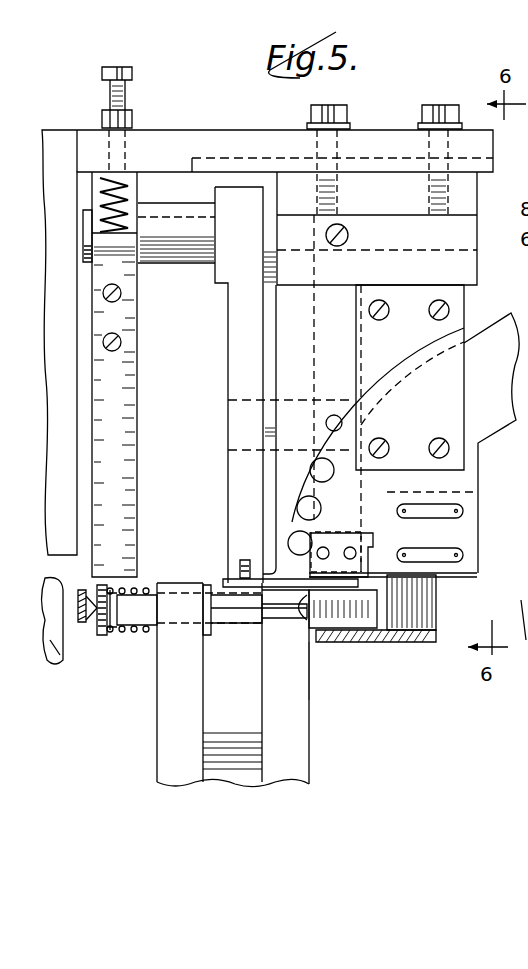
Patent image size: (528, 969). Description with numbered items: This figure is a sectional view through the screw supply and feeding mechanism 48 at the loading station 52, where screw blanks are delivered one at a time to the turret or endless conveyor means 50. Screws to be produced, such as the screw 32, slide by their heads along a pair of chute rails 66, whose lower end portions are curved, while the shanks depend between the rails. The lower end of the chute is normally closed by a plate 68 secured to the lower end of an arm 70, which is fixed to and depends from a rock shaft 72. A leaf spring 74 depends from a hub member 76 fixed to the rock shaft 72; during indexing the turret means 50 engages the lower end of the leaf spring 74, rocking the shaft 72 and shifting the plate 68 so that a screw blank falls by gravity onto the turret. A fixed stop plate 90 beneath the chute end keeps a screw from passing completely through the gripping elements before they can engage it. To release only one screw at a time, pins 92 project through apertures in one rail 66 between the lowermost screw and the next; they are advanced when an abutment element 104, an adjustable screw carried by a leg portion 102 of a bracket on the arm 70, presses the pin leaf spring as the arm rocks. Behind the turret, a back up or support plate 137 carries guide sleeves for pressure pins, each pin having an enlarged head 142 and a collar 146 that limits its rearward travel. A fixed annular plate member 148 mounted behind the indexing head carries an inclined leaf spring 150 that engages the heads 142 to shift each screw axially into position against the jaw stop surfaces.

The screw supply and feeding mechanism 48 is at (380, 114).
The hub member 76 is at (133, 197).
The leaf spring 74 is at (122, 437).
The rock shaft 72 is at (177, 264).
The arm 70 is at (233, 498).
The leg portion 102 is at (266, 398).
The rails 66 is at (510, 322).
The abutment element 104 is at (334, 414).
The pins 92 is at (352, 553).
The screw 32 is at (333, 536).
The plate 68 is at (362, 572).
The fixed stop plate 90 is at (415, 641).
The back up or support plate 137 is at (185, 695).
The turret or endless conveyor means 50 is at (312, 742).
The screw feeding or loading station 52 is at (323, 661).
The annular enlargement or collar 146 is at (252, 624).
The enlarged head 142 is at (101, 636).
The inclined leaf spring 150 is at (83, 626).
The fixed annular plate member 148 is at (49, 656).